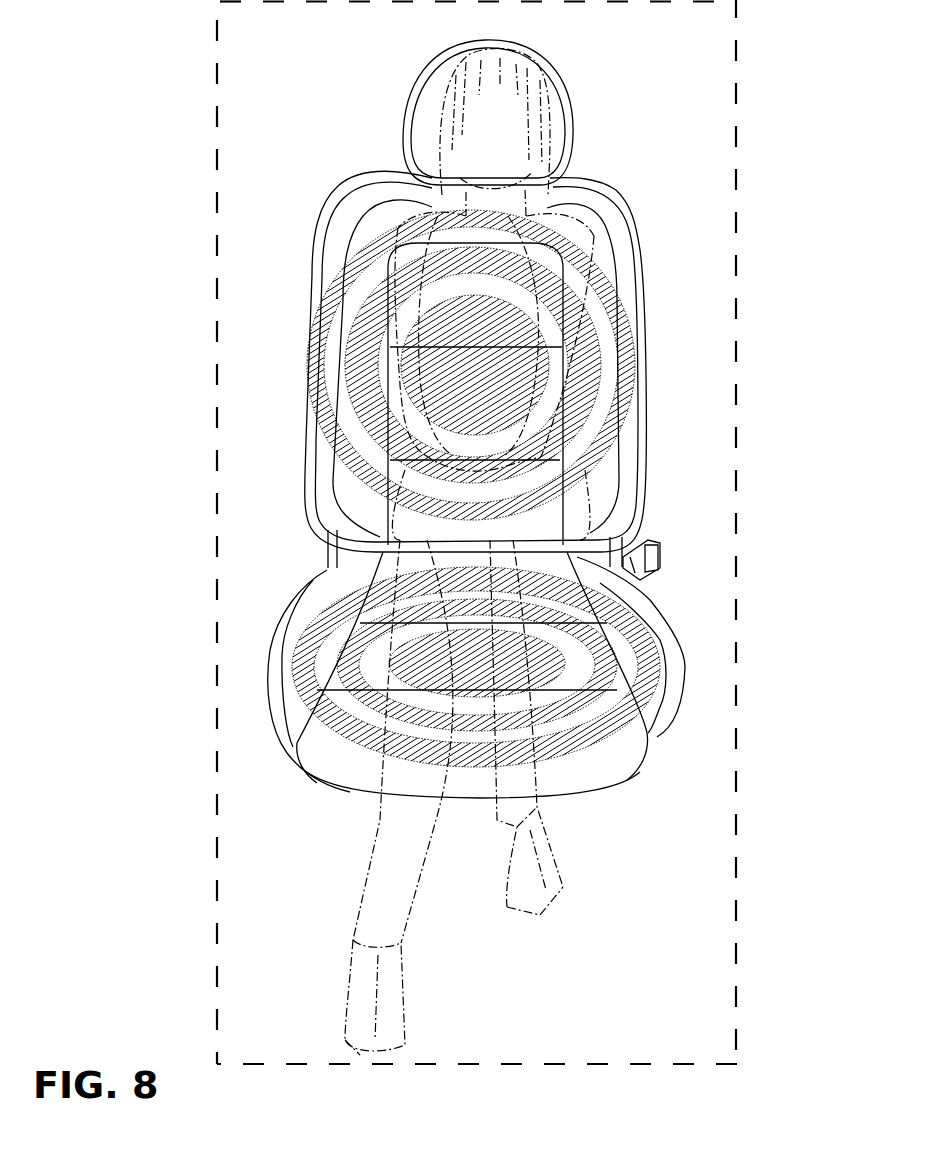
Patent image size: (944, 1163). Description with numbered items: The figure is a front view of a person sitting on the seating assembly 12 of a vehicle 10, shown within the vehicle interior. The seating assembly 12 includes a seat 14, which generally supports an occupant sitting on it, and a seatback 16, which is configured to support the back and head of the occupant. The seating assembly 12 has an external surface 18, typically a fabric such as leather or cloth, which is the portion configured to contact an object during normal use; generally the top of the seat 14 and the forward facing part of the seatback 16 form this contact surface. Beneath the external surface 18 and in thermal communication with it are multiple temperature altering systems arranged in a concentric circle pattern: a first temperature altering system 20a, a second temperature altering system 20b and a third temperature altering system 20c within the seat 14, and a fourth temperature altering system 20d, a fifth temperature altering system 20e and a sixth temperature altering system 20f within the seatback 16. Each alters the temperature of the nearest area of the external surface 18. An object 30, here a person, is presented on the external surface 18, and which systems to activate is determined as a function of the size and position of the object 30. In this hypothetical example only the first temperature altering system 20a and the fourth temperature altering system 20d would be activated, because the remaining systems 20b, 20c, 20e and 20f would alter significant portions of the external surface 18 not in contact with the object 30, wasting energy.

The vehicle 10 is at (737, 143).
The seating assembly 12 is at (642, 782).
The seat 14 is at (380, 553).
The seatback 16 is at (372, 222).
The external surface 18 is at (363, 497).
The first temperature altering system 20a is at (438, 680).
The second temperature altering system 20b is at (347, 673).
The third temperature altering system 20c is at (310, 642).
The fourth temperature altering system 20d is at (487, 315).
The fifth temperature altering system 20e is at (378, 316).
The sixth temperature altering system 20f is at (347, 438).
The object 30 is at (582, 218).